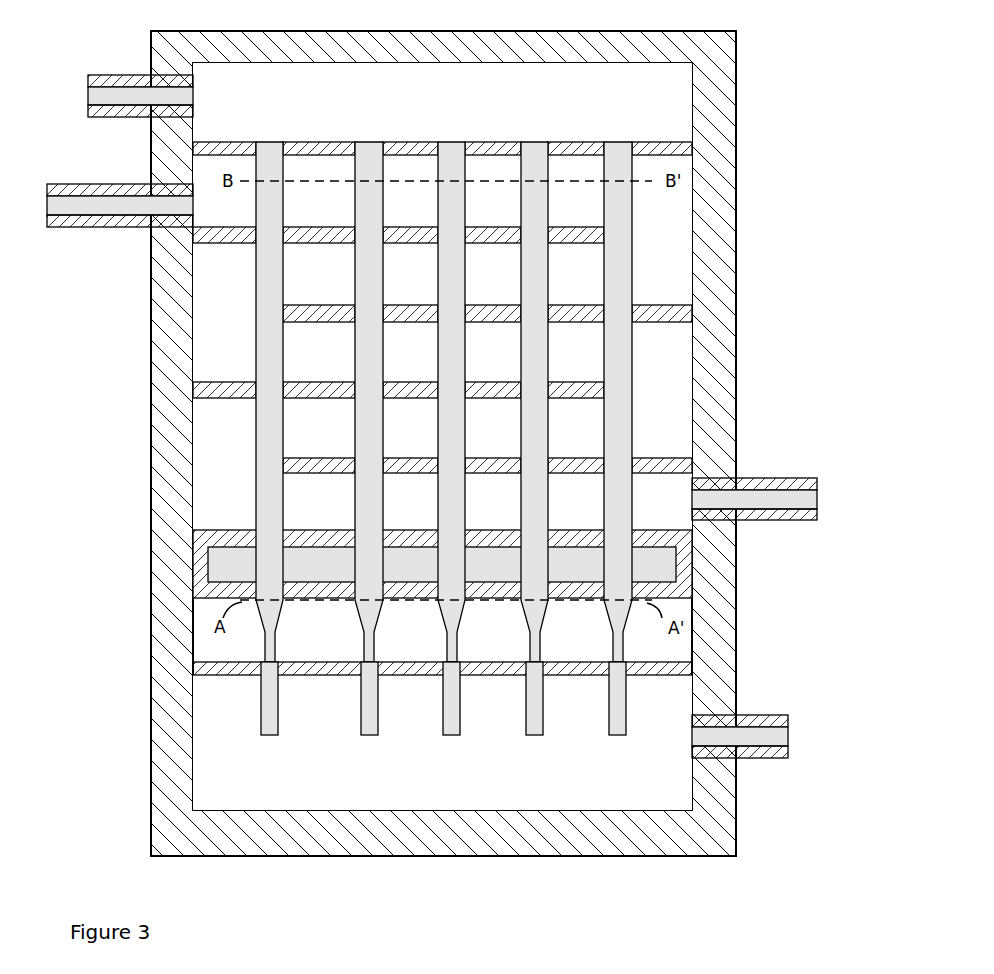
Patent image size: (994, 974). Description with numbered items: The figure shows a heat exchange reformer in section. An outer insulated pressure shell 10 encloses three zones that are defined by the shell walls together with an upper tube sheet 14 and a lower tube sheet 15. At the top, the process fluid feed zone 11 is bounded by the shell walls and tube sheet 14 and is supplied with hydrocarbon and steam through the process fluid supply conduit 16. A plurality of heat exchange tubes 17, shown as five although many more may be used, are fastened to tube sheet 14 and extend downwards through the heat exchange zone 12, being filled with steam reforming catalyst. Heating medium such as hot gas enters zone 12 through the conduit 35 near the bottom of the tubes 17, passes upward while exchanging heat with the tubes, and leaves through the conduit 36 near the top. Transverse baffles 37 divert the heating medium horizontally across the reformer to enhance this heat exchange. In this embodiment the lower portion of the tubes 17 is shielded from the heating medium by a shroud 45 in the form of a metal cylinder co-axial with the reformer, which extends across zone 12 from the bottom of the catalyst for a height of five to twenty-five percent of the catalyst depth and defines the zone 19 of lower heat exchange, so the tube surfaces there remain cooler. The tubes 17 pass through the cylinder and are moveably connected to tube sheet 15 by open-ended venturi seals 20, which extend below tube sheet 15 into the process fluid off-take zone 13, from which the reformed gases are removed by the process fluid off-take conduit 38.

The outer insulated pressure shell 10 is at (722, 337).
The process fluid feed zone 11 is at (670, 103).
The heat exchange zone 12 is at (670, 263).
The process fluid off-take zone 13 is at (670, 757).
The tube sheet 14 is at (340, 148).
The tube sheet 15 is at (227, 670).
The process fluid supply conduit 16 is at (120, 76).
The heat exchange tubes 17 is at (453, 155).
The zone of lower heat exchange 19 is at (252, 530).
The venturi seals 20 is at (445, 703).
The conduit 35 is at (765, 516).
The conduit 36 is at (85, 228).
The transverse baffles 37 is at (662, 467).
The process fluid off-take conduit 38 is at (768, 732).
The shroud 45 is at (217, 535).